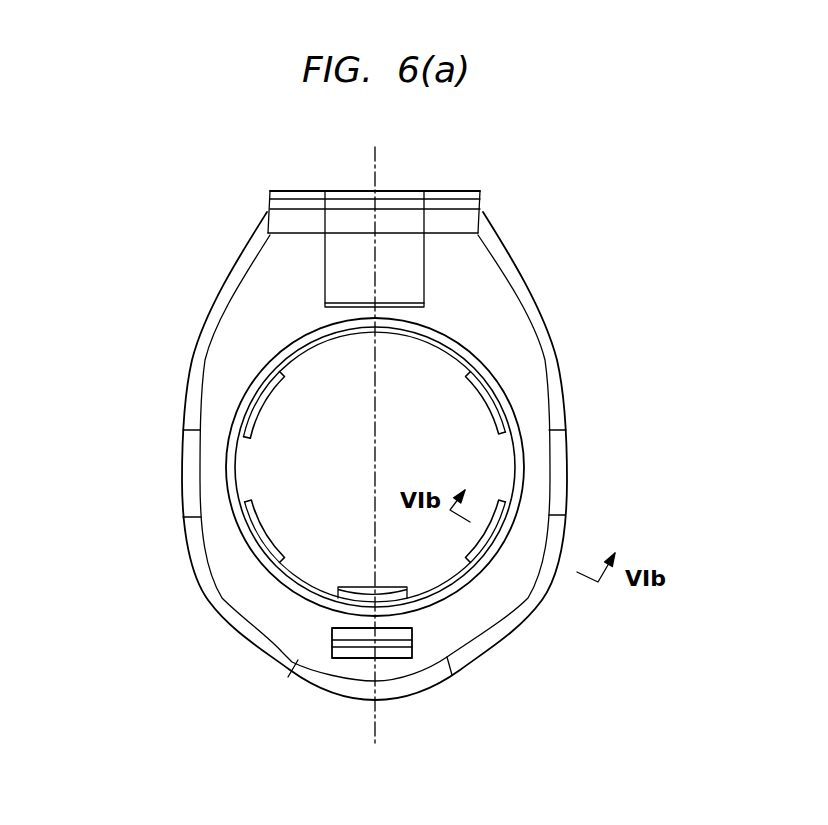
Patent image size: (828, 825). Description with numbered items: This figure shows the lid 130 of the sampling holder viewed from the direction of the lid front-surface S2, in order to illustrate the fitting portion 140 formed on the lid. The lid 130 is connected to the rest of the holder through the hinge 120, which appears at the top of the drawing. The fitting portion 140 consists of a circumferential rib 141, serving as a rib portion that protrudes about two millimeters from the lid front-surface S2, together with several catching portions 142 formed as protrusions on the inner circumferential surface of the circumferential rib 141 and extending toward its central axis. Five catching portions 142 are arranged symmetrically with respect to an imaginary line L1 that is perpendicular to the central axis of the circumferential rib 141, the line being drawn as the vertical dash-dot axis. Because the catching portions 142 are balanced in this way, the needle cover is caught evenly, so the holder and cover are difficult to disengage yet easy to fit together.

The hinge 120 is at (243, 207).
The lid 130 is at (585, 497).
The circumferential rib 141 is at (458, 350).
The catching portion 142 is at (252, 411).
The fitting portion 140 is at (458, 598).
The lid front-surface S2 is at (227, 332).
The imaginary line L1 is at (371, 465).